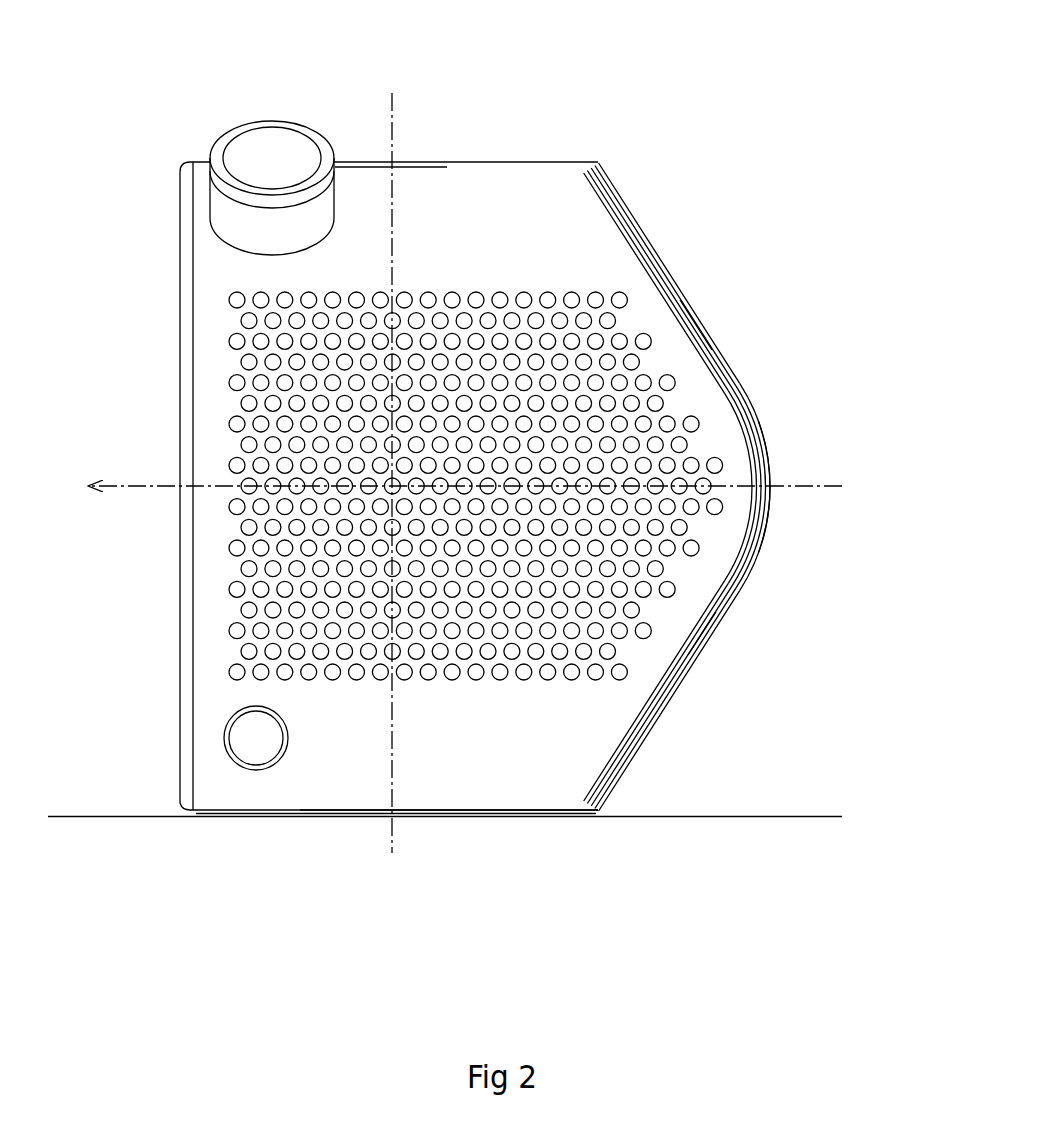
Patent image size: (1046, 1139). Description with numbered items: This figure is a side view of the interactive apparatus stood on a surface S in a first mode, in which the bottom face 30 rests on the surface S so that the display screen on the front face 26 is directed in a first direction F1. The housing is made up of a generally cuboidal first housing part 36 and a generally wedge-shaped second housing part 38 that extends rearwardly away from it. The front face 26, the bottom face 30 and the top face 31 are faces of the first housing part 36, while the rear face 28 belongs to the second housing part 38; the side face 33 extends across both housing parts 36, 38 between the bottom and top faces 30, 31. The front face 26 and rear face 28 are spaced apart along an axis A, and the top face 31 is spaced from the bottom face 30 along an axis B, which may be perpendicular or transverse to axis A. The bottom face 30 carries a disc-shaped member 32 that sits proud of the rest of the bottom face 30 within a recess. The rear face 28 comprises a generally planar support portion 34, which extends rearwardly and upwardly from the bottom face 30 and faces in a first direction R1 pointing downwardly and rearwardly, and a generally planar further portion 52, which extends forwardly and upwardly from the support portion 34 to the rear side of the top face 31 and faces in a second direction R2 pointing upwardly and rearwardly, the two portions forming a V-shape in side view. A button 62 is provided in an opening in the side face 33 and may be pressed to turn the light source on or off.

The front face 26 is at (180, 362).
The rear face 28 is at (863, 785).
The bottom face 30 is at (235, 814).
The top face 31 is at (518, 160).
The member 32 is at (465, 813).
The side face 33 is at (210, 602).
The support portion 34 is at (697, 707).
The first housing part 36 is at (610, 838).
The second housing part 38 is at (775, 838).
The further portion 52 is at (687, 267).
The button 62 is at (248, 732).
The axis A is at (793, 486).
The axis B is at (392, 128).
The first direction F1 is at (445, 486).
The first direction R1 is at (700, 630).
The second direction R2 is at (703, 338).
The surface S is at (140, 818).